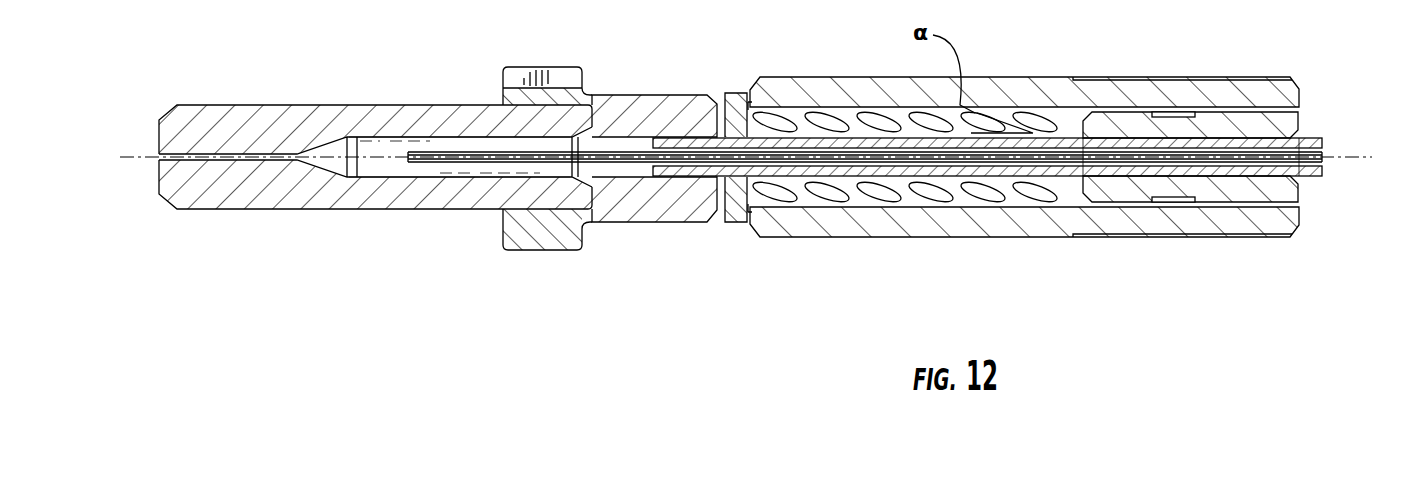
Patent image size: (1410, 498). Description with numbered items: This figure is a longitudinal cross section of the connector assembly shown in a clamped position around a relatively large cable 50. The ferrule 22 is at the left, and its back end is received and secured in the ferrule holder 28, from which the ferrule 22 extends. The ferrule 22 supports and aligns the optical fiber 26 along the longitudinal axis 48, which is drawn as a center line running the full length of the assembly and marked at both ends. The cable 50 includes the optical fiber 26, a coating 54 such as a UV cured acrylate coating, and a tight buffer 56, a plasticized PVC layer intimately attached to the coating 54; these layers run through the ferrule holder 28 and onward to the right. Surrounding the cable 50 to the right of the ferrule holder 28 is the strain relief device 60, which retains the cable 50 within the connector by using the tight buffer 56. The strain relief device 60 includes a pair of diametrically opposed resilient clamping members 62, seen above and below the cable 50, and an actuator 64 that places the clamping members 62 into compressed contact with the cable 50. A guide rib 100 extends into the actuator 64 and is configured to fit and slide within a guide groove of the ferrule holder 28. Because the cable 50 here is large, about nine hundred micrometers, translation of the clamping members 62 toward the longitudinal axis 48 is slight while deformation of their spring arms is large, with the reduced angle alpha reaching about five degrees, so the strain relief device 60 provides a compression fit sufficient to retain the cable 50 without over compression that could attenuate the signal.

The ferrule 22 is at (245, 118).
The optical fiber 26 is at (368, 162).
The ferrule holder 28 is at (638, 104).
The longitudinal axis 48 is at (747, 157).
The fiber optic cable 50 is at (1314, 182).
The coating 54 is at (467, 163).
The tight buffer 56 is at (685, 172).
The strain relief device 60 is at (812, 258).
The clamping member 62 is at (902, 122).
The actuator 64 is at (990, 90).
The guide rib 100 is at (1167, 112).